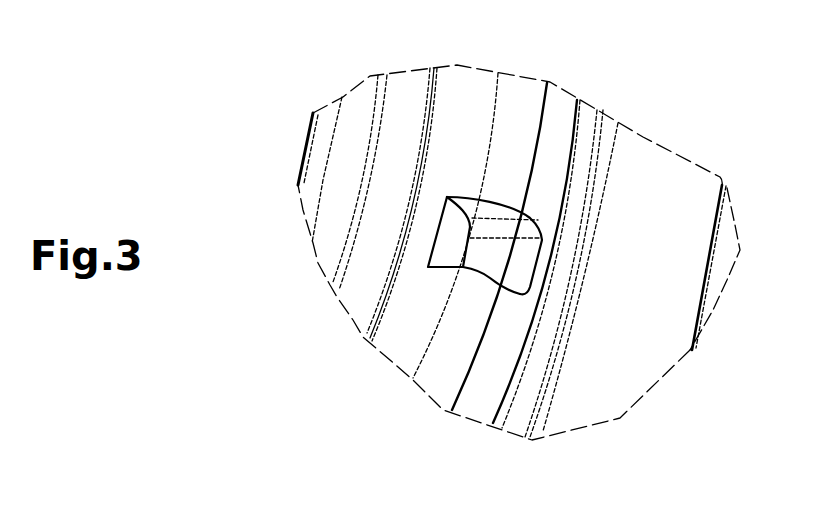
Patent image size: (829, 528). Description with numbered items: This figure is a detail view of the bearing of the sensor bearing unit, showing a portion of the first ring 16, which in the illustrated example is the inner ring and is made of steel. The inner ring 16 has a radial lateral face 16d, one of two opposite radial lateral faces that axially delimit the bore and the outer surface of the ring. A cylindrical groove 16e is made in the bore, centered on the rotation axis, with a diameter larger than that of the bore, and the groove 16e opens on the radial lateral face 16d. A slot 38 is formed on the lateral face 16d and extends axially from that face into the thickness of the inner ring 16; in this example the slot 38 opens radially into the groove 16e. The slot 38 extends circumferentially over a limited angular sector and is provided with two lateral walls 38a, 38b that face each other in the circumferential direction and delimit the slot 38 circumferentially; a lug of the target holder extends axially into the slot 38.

The first ring 16 is at (507, 148).
The radial lateral face 16d is at (473, 396).
The cylindrical groove 16e is at (463, 137).
The slot 38 is at (512, 255).
The lateral wall 38a is at (467, 204).
The lateral wall 38b is at (476, 270).